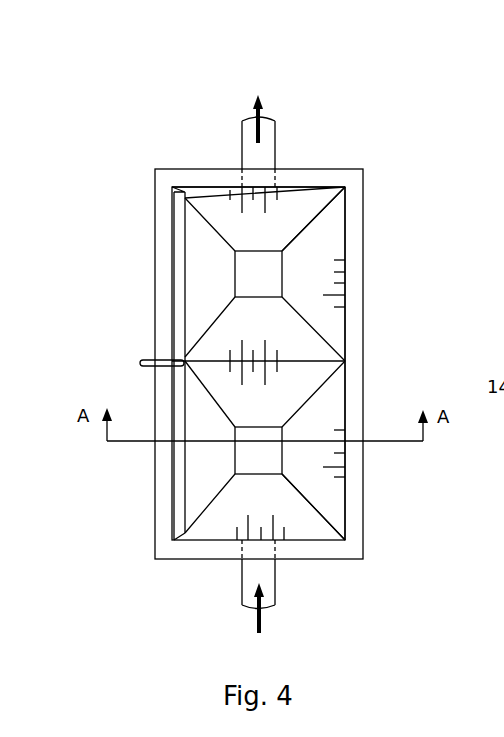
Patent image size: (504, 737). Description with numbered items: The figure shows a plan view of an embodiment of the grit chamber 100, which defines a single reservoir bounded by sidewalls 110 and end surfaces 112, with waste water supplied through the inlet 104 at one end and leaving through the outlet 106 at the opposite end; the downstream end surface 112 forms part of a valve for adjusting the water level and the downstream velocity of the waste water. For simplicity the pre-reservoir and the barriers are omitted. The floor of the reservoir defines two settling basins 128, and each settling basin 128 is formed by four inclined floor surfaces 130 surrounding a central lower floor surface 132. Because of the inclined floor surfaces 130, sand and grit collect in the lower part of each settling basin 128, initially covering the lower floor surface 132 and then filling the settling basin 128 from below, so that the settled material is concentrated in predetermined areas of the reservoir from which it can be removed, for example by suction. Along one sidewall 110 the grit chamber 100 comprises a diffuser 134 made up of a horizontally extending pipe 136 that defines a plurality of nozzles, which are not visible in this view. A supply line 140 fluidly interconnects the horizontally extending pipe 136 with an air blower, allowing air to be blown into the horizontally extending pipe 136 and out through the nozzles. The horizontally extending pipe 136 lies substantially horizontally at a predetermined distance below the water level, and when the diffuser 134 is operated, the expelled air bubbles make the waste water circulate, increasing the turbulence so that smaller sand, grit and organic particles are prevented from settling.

The grit chamber 100 is at (451, 120).
The inlet 104 is at (263, 573).
The outlet 106 is at (267, 137).
The sidewalls 110 is at (337, 318).
The end surfaces 112 is at (305, 190).
The settling basins 128 is at (220, 220).
The inclined floor surfaces 130 is at (276, 505).
The lower floor surface 132 is at (275, 465).
The diffuser 134 is at (115, 363).
The horizontally extending pipe 136 is at (178, 280).
The supply line 140 is at (152, 363).